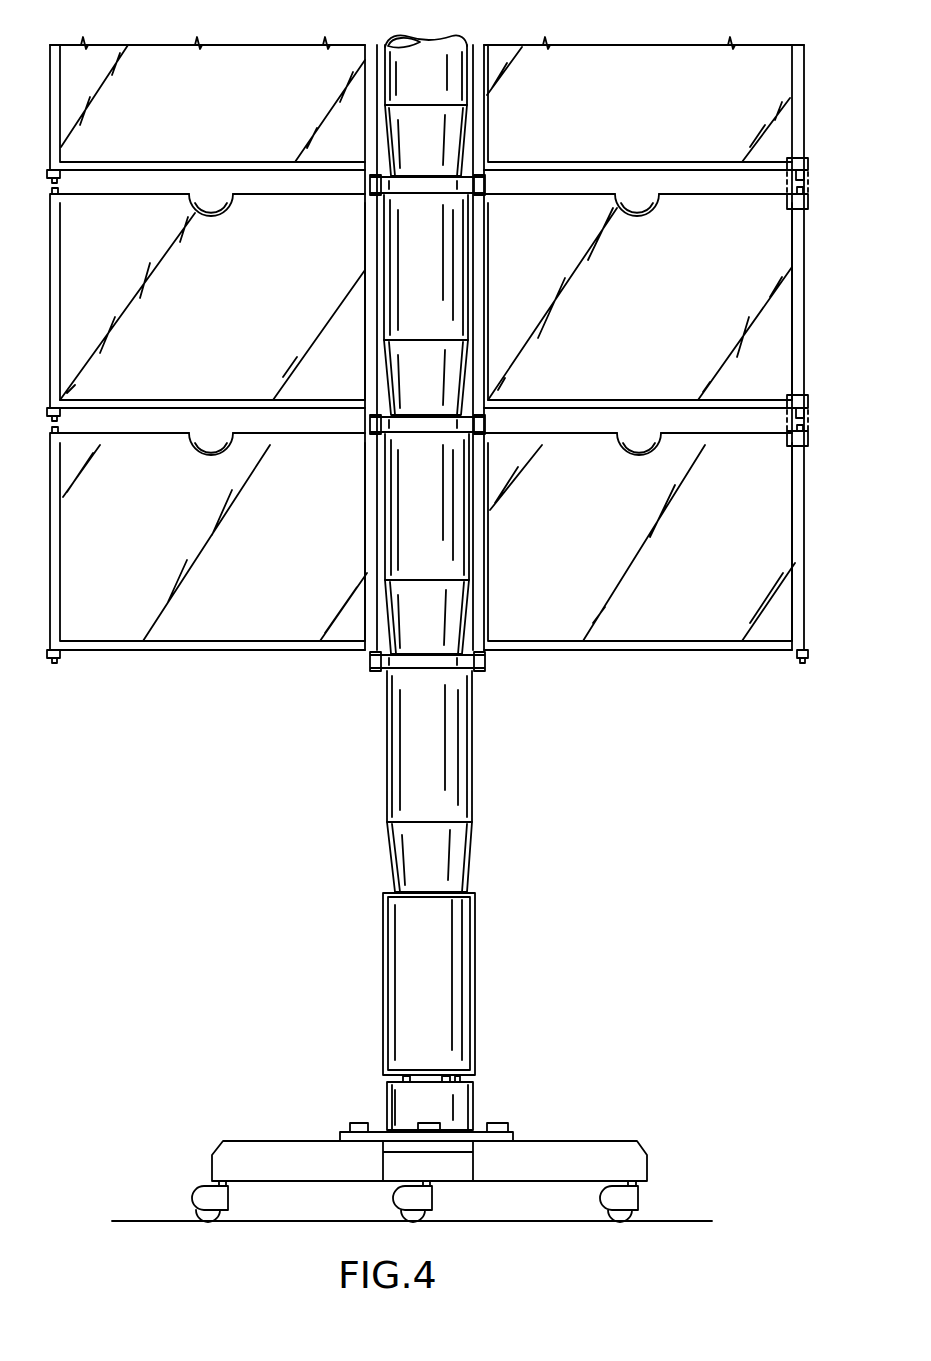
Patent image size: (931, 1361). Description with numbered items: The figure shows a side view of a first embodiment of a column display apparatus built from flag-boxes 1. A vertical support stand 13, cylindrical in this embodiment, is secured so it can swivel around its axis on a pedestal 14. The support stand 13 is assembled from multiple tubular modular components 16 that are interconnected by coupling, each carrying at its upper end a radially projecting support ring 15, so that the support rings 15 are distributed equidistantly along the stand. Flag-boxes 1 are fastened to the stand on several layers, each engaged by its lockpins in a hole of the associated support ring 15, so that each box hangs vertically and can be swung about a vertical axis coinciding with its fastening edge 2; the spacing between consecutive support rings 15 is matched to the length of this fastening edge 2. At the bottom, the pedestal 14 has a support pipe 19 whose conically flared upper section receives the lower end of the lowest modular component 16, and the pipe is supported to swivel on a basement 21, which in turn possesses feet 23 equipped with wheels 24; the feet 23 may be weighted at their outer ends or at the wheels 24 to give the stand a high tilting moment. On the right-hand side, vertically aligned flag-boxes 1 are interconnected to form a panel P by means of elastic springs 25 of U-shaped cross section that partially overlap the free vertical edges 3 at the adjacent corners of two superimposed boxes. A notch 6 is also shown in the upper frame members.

The flag-box 1 is at (262, 52).
The vertical fastening edge 2 is at (372, 48).
The free vertical edge 3 is at (798, 92).
The notch 6 is at (638, 214).
The vertical support stand 13 is at (434, 588).
The pedestal 14 is at (426, 1094).
The support ring 15 is at (402, 183).
The modular component 16 is at (460, 287).
The support pipe 19 is at (475, 1000).
The basement 21 is at (387, 1100).
The foot 23 is at (606, 1144).
The wheel 24 is at (198, 1196).
The elastic spring 25 is at (808, 180).
The panel P is at (805, 270).